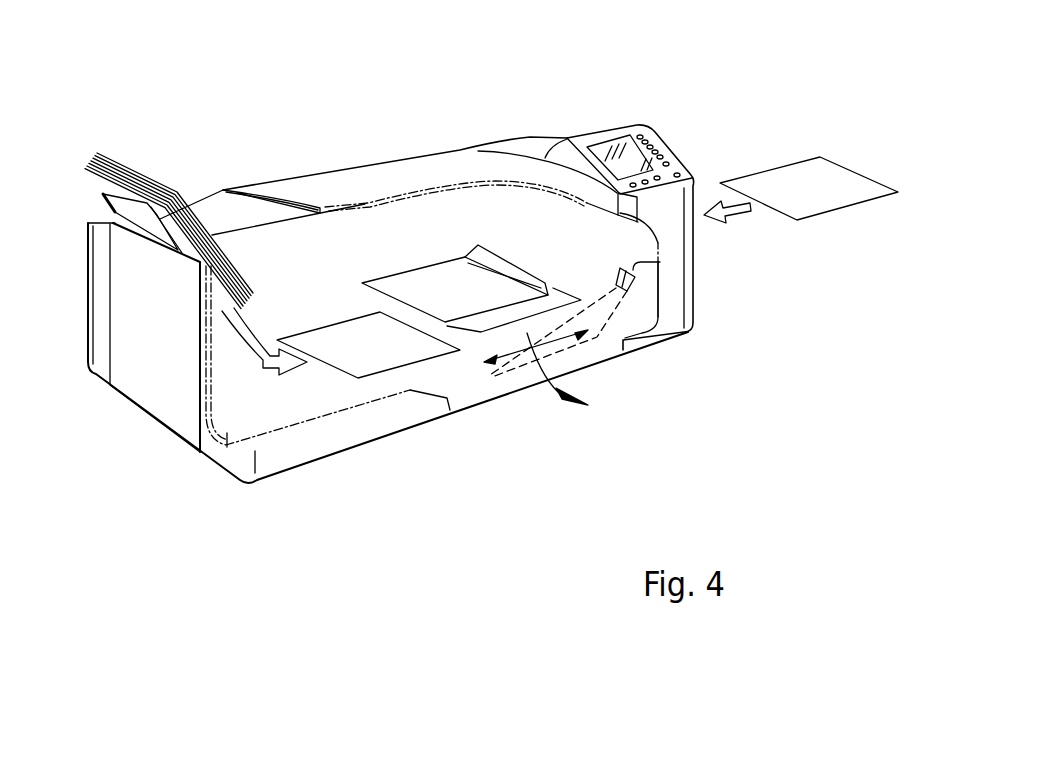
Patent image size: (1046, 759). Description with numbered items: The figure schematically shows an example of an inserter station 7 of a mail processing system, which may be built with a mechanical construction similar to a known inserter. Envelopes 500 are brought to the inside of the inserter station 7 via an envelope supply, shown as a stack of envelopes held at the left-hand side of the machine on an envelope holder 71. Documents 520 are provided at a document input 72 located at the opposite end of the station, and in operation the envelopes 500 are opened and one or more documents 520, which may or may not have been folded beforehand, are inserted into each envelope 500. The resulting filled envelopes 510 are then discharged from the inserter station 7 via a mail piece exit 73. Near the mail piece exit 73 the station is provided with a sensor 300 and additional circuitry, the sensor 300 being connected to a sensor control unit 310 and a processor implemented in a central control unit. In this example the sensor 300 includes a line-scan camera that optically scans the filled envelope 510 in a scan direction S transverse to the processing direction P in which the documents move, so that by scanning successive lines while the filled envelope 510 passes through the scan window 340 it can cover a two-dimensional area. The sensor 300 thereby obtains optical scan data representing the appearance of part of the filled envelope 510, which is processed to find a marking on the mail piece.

The inserter station 7 is at (665, 103).
The sheet feeding tray 71 is at (132, 208).
The document input 72 is at (695, 200).
The mail piece exit 73 is at (480, 397).
The sensor 300 is at (628, 288).
The sensor control unit 310 is at (660, 261).
The scan window 340 is at (590, 320).
The envelopes 500 is at (147, 170).
The filled envelope 510 is at (428, 300).
The documents 520 is at (790, 197).
The processing direction P is at (560, 397).
The scan direction S is at (550, 343).